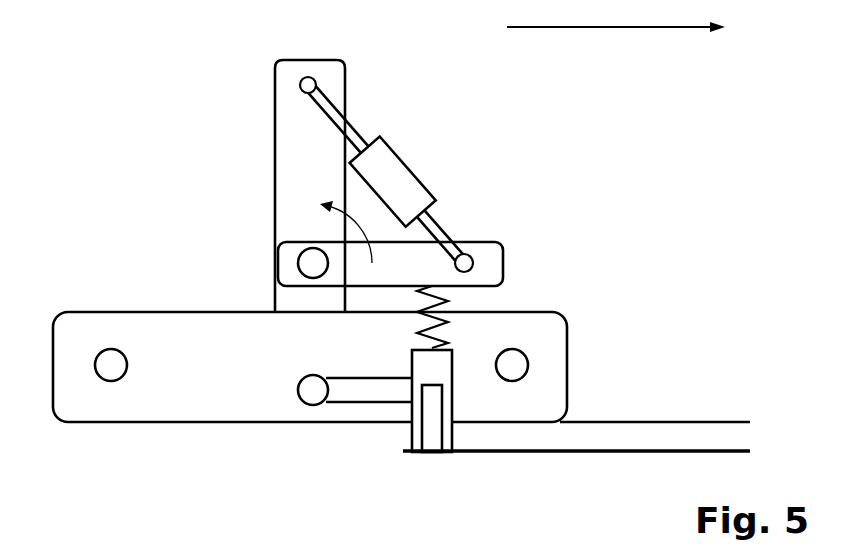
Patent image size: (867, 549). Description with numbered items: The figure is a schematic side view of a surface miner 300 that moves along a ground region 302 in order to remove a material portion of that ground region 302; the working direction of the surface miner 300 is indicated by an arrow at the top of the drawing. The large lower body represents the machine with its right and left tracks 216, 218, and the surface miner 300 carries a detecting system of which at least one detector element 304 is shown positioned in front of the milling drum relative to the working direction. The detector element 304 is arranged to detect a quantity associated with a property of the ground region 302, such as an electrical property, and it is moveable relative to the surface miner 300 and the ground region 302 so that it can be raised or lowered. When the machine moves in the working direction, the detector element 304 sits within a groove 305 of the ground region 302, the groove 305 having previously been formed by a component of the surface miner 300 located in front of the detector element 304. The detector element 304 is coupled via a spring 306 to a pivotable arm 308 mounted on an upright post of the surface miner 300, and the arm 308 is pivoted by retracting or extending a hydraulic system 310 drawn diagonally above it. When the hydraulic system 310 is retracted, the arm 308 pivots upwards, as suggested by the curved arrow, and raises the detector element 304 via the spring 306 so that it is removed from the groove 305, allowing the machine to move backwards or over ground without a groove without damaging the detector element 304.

The surface miner 300 is at (401, 267).
The ground region 302 is at (146, 512).
The detector element 304 is at (428, 431).
The groove 305 is at (613, 455).
The spring 306 is at (443, 304).
The pivotable arm 308 is at (503, 267).
The hydraulic system 310 is at (412, 169).
The right track 216 is at (310, 241).
The left track 218 is at (133, 311).